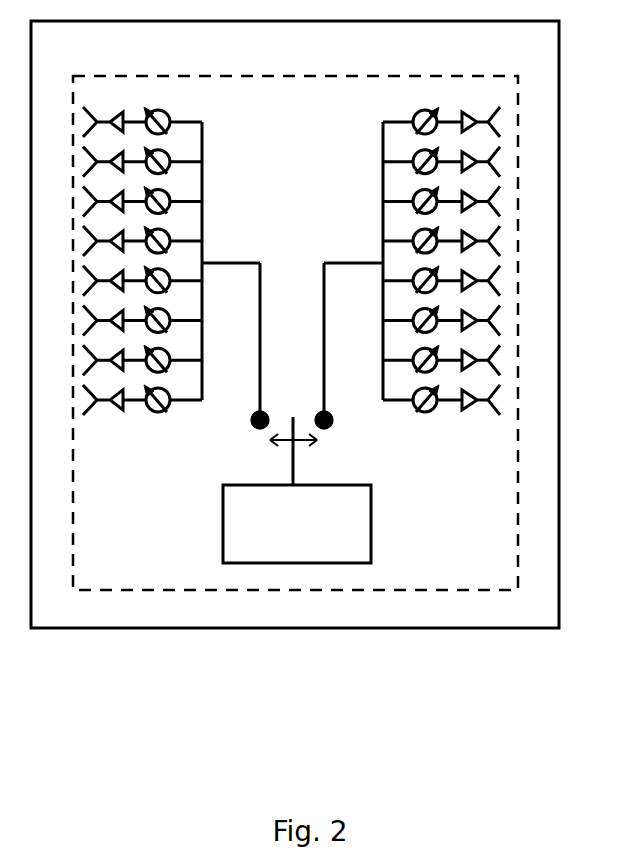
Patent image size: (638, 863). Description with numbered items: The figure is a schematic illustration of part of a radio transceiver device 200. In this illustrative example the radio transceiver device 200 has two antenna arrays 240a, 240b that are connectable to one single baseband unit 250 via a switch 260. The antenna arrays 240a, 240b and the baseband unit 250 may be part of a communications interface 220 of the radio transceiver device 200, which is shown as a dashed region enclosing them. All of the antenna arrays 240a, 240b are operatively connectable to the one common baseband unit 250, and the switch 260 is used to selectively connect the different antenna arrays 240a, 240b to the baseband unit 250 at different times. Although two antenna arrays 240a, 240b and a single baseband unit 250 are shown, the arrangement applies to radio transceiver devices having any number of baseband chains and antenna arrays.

The radio transceiver device 200 is at (273, 57).
The communications interface 220 is at (273, 113).
The antenna array 240a is at (82, 423).
The antenna array 240b is at (370, 423).
The baseband unit 250 is at (371, 551).
The switch 260 is at (293, 417).